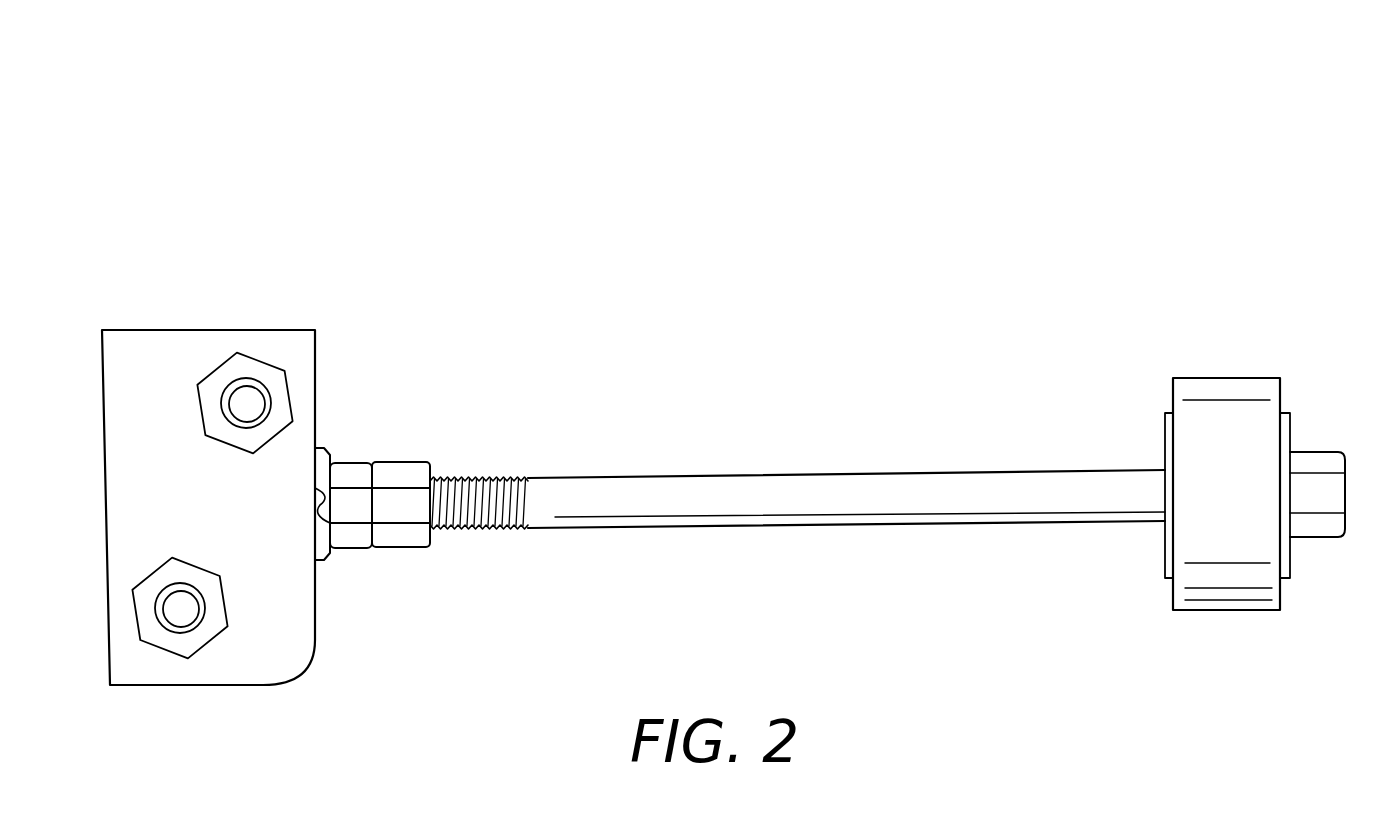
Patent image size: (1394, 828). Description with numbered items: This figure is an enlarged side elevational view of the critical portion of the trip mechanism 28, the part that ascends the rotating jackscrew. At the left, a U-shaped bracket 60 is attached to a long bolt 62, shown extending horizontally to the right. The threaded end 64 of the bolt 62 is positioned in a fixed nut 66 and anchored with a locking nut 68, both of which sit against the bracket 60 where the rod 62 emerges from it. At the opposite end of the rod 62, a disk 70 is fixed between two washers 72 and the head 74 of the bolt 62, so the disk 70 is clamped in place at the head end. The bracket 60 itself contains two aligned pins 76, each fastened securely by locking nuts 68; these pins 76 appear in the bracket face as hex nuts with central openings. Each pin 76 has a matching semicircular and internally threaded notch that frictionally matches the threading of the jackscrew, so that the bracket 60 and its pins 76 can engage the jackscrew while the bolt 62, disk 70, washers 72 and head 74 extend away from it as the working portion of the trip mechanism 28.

The trip mechanism 28 is at (736, 124).
The U-shaped bracket 60 is at (212, 328).
The long bolt 62 is at (805, 476).
The threaded end 64 is at (502, 530).
The fixed nut 66 is at (340, 463).
The locking nut 68 is at (185, 565).
The disk 70 is at (1243, 497).
The washers 72 is at (1163, 432).
The head 74 is at (1315, 457).
The pins 76 is at (243, 402).